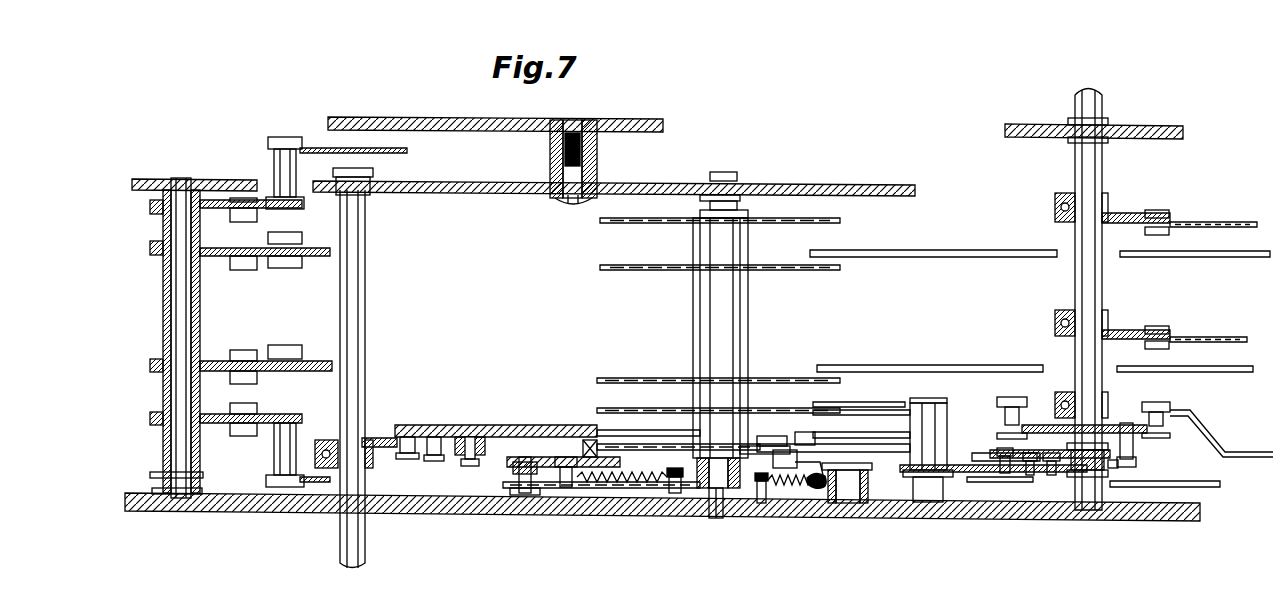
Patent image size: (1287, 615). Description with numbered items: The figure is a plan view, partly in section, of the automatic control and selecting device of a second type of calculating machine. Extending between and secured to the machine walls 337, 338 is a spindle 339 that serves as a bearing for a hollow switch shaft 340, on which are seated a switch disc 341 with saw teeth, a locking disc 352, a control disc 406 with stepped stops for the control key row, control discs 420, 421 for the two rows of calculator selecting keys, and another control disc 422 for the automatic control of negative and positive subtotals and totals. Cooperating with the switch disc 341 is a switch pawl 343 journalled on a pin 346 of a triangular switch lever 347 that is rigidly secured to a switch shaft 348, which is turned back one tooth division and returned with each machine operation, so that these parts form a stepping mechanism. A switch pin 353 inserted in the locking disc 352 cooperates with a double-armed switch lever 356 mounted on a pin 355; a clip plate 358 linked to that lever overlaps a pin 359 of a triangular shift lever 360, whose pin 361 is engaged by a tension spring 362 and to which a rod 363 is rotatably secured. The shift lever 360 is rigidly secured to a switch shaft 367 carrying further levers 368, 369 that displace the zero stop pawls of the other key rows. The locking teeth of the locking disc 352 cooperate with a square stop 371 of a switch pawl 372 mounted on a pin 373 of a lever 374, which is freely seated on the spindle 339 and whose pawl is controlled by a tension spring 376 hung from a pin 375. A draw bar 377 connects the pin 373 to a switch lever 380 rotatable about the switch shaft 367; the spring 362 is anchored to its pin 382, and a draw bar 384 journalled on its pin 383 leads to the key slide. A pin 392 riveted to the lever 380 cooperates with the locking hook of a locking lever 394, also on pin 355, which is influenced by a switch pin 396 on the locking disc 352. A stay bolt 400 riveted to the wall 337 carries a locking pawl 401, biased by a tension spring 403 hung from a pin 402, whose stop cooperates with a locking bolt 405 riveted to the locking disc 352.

The wall 337 is at (405, 513).
The wall 338 is at (808, 181).
The spindle 339 is at (714, 518).
The switch shaft 340 is at (703, 330).
The switch disc 341 is at (612, 438).
The switch pawl 343 is at (480, 425).
The pin 346 is at (468, 468).
The switch lever 347 is at (380, 438).
The switch shaft 348 is at (342, 528).
The locking disc 352 is at (655, 430).
The switch pin 353 is at (805, 432).
The pin 355 is at (930, 420).
The switch lever 356 is at (880, 365).
The clip plate 358 is at (985, 398).
The pin 359 is at (1000, 425).
The shift lever 360 is at (1048, 425).
The pin 361 is at (1135, 447).
The tension spring 362 is at (1113, 468).
The rod 363 is at (1237, 452).
The switch shaft 367 is at (1096, 156).
The lever 368 is at (1137, 330).
The lever 369 is at (1130, 215).
The square stop 371 is at (575, 450).
The switch pawl 372 is at (535, 457).
The pin 373 is at (518, 482).
The lever 374 is at (632, 488).
The pin 375 is at (674, 493).
The tension spring 376 is at (568, 485).
The draw bar 377 is at (592, 488).
The switch lever 380 is at (1085, 477).
The pin 382 is at (1055, 475).
The pin 383 is at (1004, 473).
The draw bar 384 is at (972, 460).
The pin 392 is at (1030, 475).
The locking lever 394 is at (870, 453).
The switch pin 396 is at (787, 470).
The stay bolt 400 is at (842, 457).
The locking pawl 401 is at (838, 478).
The pin 402 is at (758, 503).
The tension spring 403 is at (788, 487).
The locking bolt 405 is at (765, 436).
The control disc 406 is at (612, 220).
The control disc 420 is at (605, 378).
The control disc 421 is at (600, 408).
The control disc 422 is at (612, 267).